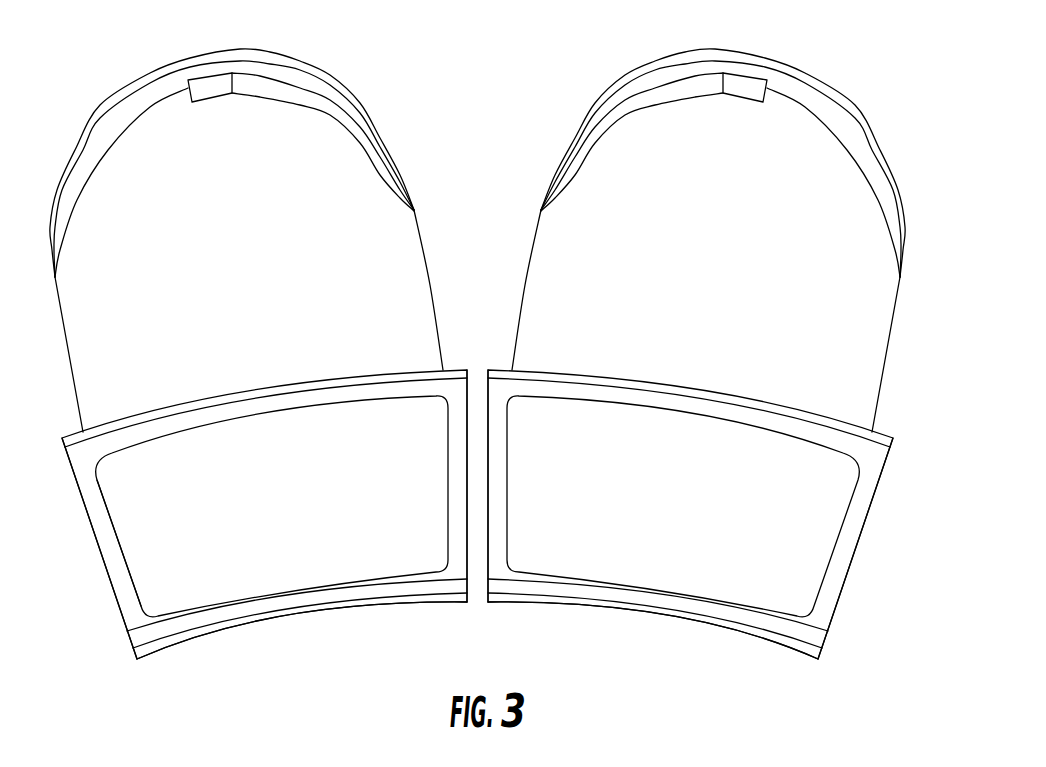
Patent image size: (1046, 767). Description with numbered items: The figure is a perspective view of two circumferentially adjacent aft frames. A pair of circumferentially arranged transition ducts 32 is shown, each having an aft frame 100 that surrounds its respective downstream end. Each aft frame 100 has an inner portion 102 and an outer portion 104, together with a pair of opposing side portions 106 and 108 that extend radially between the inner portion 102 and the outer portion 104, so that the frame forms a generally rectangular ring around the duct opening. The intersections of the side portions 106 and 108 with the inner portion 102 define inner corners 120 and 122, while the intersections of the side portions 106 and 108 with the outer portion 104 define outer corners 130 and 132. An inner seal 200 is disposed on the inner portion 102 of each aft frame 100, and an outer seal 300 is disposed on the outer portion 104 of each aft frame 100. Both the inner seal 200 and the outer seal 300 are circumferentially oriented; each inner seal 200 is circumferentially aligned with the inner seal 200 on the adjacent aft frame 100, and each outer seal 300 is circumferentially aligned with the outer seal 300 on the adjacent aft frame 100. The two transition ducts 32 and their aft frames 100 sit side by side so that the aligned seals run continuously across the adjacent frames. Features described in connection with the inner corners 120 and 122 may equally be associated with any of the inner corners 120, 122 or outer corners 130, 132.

The transition duct 32 is at (907, 128).
The aft frame 100 is at (715, 531).
The inner portion 102 is at (313, 583).
The outer portion 104 is at (733, 427).
The side portion 106 is at (446, 430).
The side portion 108 is at (125, 558).
The inner corner 120 is at (127, 627).
The inner corner 122 is at (823, 630).
The outer corner 130 is at (82, 507).
The outer corner 132 is at (883, 478).
The inner seal 200 is at (244, 531).
The outer seal 300 is at (493, 368).